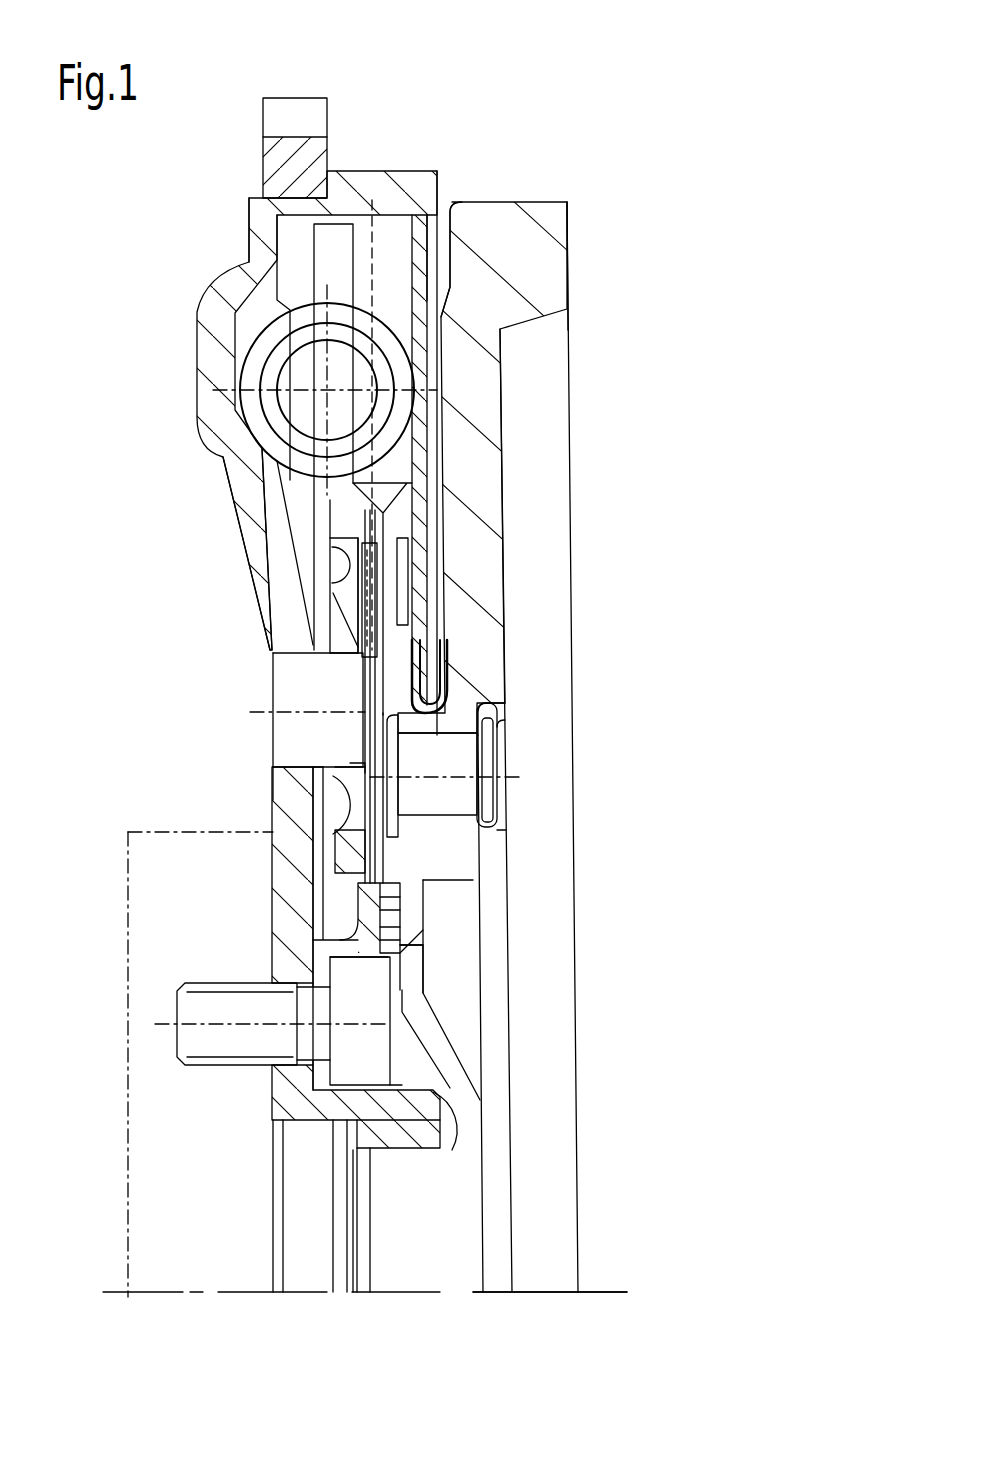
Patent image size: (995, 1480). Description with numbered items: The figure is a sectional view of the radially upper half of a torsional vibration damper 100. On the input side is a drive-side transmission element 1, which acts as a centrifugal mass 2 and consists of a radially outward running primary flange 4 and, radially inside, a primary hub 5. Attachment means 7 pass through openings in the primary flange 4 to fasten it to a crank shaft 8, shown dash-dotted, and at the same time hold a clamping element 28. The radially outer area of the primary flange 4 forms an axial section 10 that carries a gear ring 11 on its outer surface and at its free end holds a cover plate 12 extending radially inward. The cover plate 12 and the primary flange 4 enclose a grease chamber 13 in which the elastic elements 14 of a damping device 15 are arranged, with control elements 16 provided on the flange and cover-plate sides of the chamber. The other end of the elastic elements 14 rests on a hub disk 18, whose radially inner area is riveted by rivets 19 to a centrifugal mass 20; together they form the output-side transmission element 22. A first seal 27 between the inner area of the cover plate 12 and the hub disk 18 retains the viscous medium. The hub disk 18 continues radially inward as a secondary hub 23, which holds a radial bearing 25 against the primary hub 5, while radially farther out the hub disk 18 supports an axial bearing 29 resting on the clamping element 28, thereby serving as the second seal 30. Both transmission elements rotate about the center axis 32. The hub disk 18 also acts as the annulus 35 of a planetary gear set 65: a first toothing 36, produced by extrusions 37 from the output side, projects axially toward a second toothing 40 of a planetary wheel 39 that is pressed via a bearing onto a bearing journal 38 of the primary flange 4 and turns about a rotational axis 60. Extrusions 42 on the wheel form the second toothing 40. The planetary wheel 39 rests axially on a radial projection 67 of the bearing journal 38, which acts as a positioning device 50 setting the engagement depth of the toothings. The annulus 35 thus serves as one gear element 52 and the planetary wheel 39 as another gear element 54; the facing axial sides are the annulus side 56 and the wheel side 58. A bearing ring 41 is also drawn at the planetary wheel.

The torsional vibration damper 100 is at (449, 36).
The drive-side transmission element 1 is at (234, 875).
The centrifugal mass 2 is at (206, 553).
The primary flange 4 is at (251, 853).
The primary hub 5 is at (384, 1243).
The attachment means 7 is at (227, 1021).
The crank shaft 8 is at (269, 990).
The axial section 10 is at (317, 419).
The gear ring 11 is at (318, 126).
The cover plate 12 is at (477, 215).
The grease chamber 13 is at (200, 549).
The elastic elements 14 is at (260, 390).
The damping device 15 is at (379, 348).
The control elements 16 is at (303, 200).
The hub disk 18 is at (231, 200).
The rivets 19 is at (555, 769).
The centrifugal mass 20 is at (525, 708).
The output-side transmission element 22 is at (608, 266).
The secondary hub 23 is at (469, 1178).
The radial bearing 25 is at (529, 1104).
The first seal 27 is at (549, 731).
The clamping element 28 is at (518, 961).
The axial bearing 29 is at (526, 915).
The second seal 30 is at (521, 913).
The center axis 32 is at (581, 1260).
The annulus 35 is at (516, 696).
The first toothing 36 is at (532, 599).
The extrusions 37 is at (527, 559).
The bearing journal 38 is at (195, 916).
The planetary wheel 39 is at (243, 609).
The second toothing 40 is at (210, 598).
The bearing ring 41 is at (219, 836).
The extrusions 42 is at (241, 595).
The positioning device 50 is at (221, 713).
The gear element 52 is at (537, 676).
The gear element 54 is at (152, 710).
The axial side of the annulus 56 is at (251, 696).
The axial side of the planetary wheel 58 is at (531, 864).
The rotational axis 60 is at (152, 770).
The planetary gear set 65 is at (211, 492).
The radial projection 67 is at (177, 798).